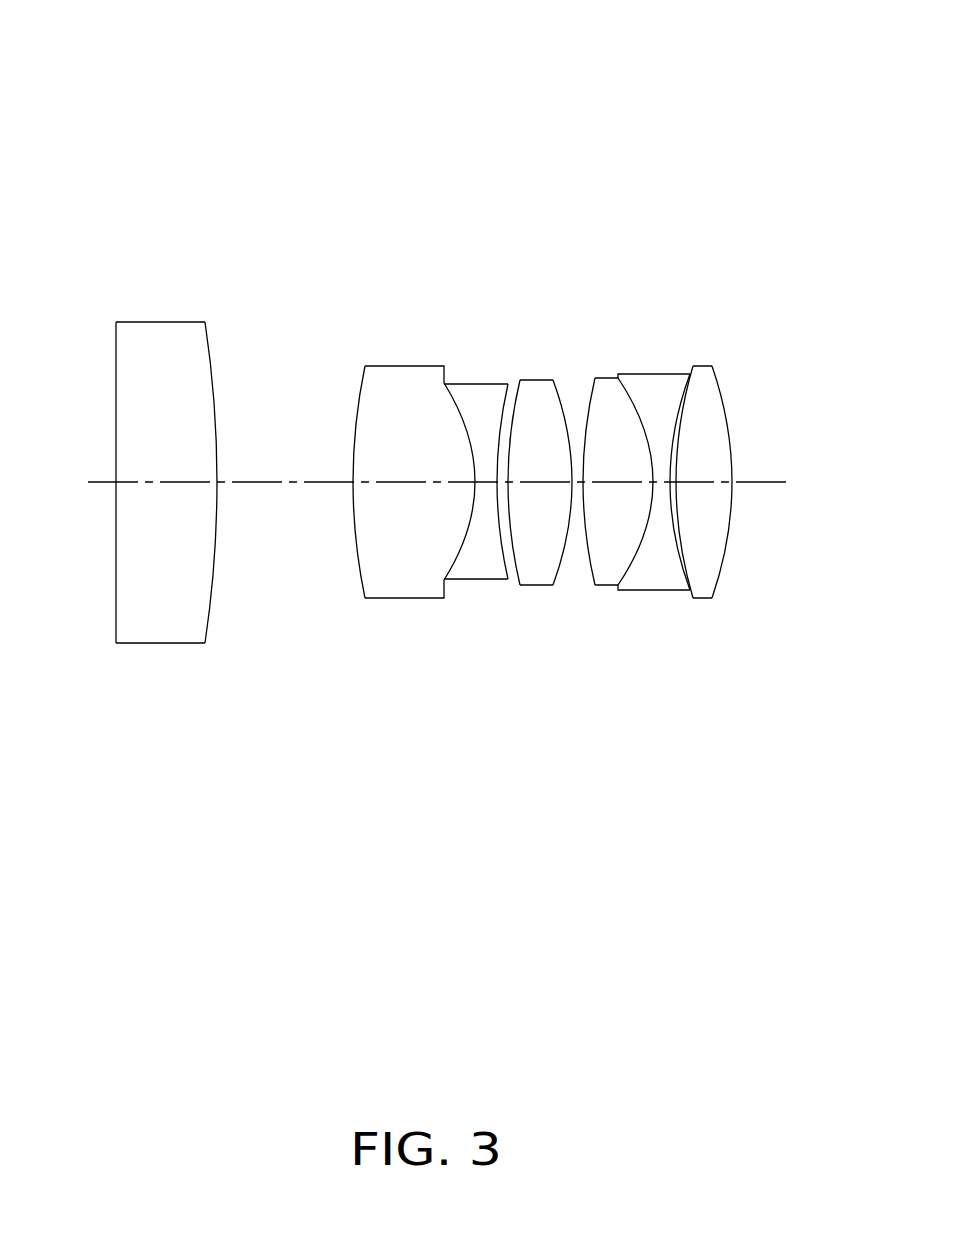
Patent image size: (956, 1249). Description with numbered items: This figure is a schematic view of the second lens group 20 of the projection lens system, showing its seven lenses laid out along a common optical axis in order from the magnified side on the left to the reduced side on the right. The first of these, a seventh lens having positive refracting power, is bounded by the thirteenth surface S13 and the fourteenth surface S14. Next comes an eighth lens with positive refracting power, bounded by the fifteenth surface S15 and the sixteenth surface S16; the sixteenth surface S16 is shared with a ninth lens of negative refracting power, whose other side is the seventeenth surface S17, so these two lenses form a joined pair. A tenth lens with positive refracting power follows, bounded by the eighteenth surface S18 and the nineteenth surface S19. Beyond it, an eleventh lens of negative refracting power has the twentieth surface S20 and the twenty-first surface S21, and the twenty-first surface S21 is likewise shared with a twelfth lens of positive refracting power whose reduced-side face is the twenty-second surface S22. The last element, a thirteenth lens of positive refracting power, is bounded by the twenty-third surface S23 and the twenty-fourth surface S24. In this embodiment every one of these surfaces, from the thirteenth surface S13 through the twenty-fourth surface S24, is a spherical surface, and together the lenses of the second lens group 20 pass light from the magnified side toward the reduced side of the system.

The second lens group 20 is at (158, 66).
The thirteenth surface S13 is at (116, 386).
The fourteenth surface S14 is at (215, 398).
The fifteenth surface S15 is at (354, 450).
The sixteenth surface S16 is at (457, 409).
The seventeenth surface S17 is at (501, 418).
The eighteenth surface S18 is at (516, 418).
The nineteenth surface S19 is at (559, 400).
The twentieth surface S20 is at (590, 420).
The twenty-first surface S21 is at (632, 567).
The twenty-second surface S22 is at (677, 548).
The twenty-third surface S23 is at (680, 455).
The twenty-fourth surface S24 is at (722, 393).